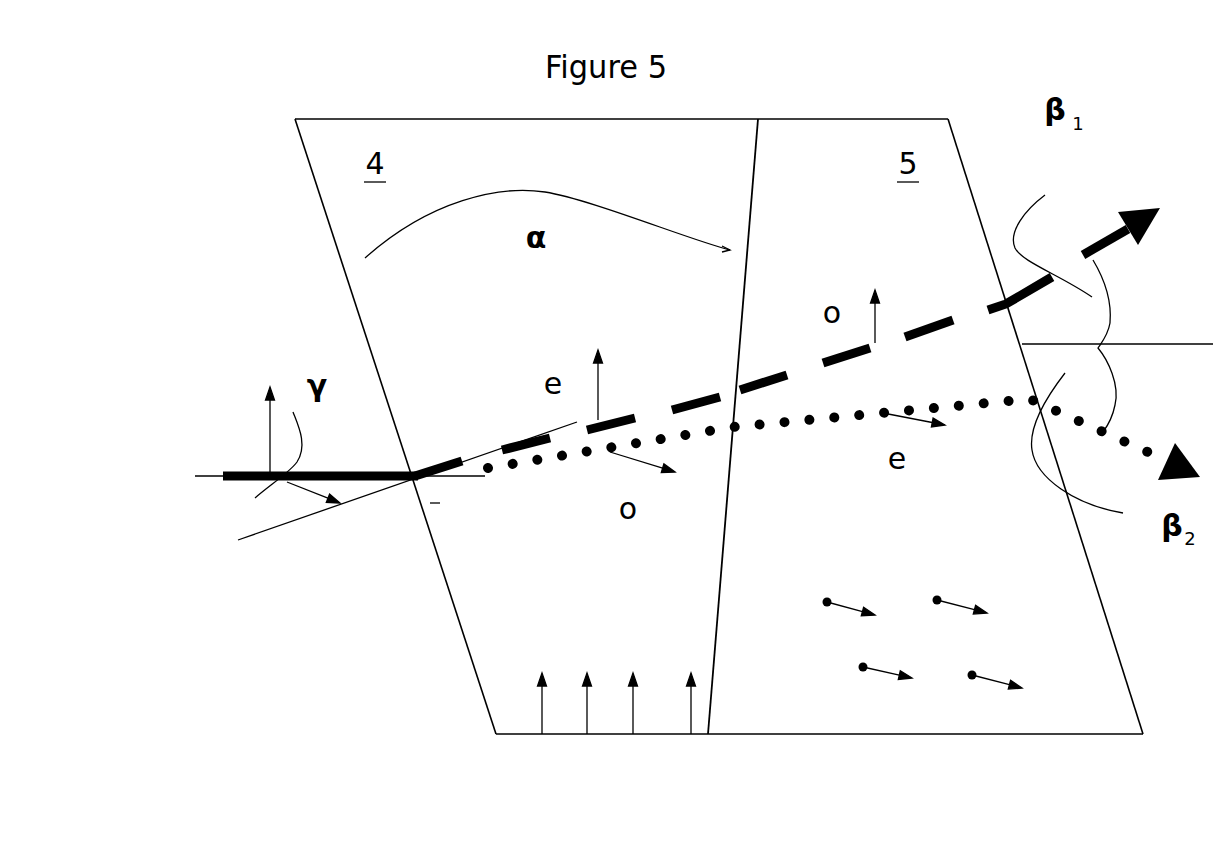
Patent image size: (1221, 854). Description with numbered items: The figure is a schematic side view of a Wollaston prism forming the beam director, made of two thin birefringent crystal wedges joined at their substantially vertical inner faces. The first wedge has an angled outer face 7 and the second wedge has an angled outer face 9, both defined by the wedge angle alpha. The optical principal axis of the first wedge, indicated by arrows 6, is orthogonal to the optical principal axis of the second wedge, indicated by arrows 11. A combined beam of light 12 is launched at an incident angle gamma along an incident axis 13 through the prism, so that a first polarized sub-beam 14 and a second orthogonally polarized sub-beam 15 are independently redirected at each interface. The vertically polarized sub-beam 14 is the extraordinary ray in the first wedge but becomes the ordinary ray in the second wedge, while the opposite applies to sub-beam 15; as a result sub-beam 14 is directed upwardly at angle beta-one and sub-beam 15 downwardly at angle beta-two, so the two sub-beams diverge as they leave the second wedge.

The arrows 6 is at (587, 708).
The angled outer face 7 is at (325, 213).
The angled outer face 9 is at (1118, 642).
The arrows 11 is at (877, 680).
The combined beam of light 12 is at (352, 482).
The incident axis 13 is at (202, 482).
The first polarized sub-beam 14 is at (958, 312).
The second orthogonally polarized sub-beam 15 is at (1000, 418).